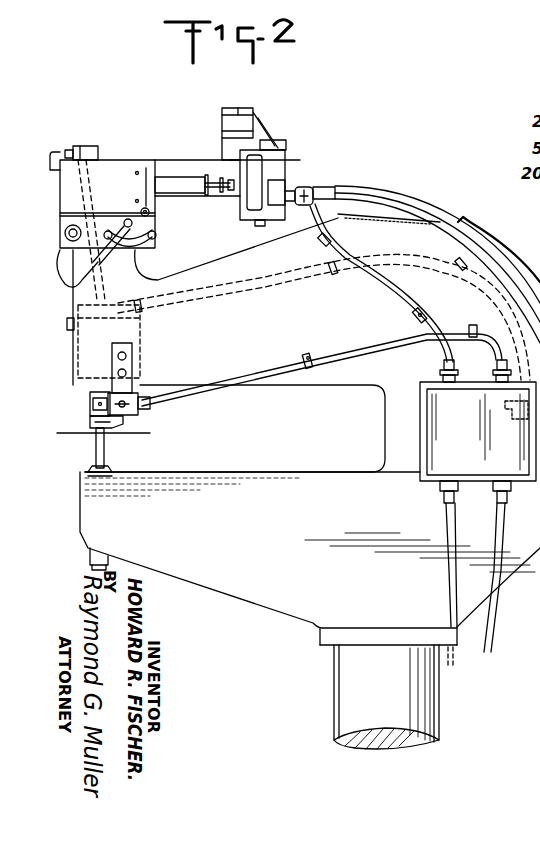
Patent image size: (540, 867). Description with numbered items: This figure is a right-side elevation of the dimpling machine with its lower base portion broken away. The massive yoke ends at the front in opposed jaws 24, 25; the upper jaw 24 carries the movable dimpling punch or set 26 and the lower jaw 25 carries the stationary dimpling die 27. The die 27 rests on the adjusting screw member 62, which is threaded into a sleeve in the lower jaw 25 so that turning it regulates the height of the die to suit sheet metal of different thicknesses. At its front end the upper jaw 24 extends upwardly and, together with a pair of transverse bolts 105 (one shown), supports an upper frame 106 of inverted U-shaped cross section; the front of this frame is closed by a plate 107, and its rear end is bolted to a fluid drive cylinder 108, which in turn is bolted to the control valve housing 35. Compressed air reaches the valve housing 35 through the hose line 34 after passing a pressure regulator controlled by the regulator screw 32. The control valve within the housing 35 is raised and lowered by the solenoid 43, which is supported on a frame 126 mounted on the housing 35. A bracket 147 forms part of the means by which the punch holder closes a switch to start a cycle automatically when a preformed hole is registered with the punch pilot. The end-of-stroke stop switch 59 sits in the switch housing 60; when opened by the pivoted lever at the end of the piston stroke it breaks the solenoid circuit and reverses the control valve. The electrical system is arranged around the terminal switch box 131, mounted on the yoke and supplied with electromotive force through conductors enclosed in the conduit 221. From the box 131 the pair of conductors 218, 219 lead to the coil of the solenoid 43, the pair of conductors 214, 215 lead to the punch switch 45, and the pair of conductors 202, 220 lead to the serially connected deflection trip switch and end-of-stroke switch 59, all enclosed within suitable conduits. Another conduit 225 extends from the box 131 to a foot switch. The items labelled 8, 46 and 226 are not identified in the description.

The base plate line 8 is at (138, 437).
The upper jaw 24 is at (240, 355).
The lower jaw 25 is at (240, 527).
The movable dimpling punch 26 is at (92, 425).
The stationary dimpling die 27 is at (95, 442).
The regulator screw 32 is at (348, 679).
The hose line 34 is at (398, 200).
The valve housing 35 is at (246, 217).
The solenoid 43 is at (270, 108).
The punch switch 45 is at (147, 414).
The clamp block 46 is at (82, 400).
The stop switch 59 is at (69, 150).
The switch housing 60 is at (90, 146).
The adjusting screw member 62 is at (92, 465).
The transverse bolts 105 is at (80, 232).
The upper frame 106 is at (118, 170).
The plate 107 is at (72, 268).
The fluid drive cylinder 108 is at (170, 175).
The frame 126 is at (232, 150).
The terminal box 131 is at (462, 448).
The bracket 147 is at (142, 365).
The conductor 202 is at (106, 303).
The conductor 214 is at (277, 397).
The conductor 215 is at (259, 423).
The conductor 218 is at (447, 304).
The conductor 219 is at (428, 302).
The conductor 220 is at (329, 268).
The conduit 221 is at (498, 537).
The conduit 225 is at (445, 520).
The housing (dashed) 226 is at (80, 301).